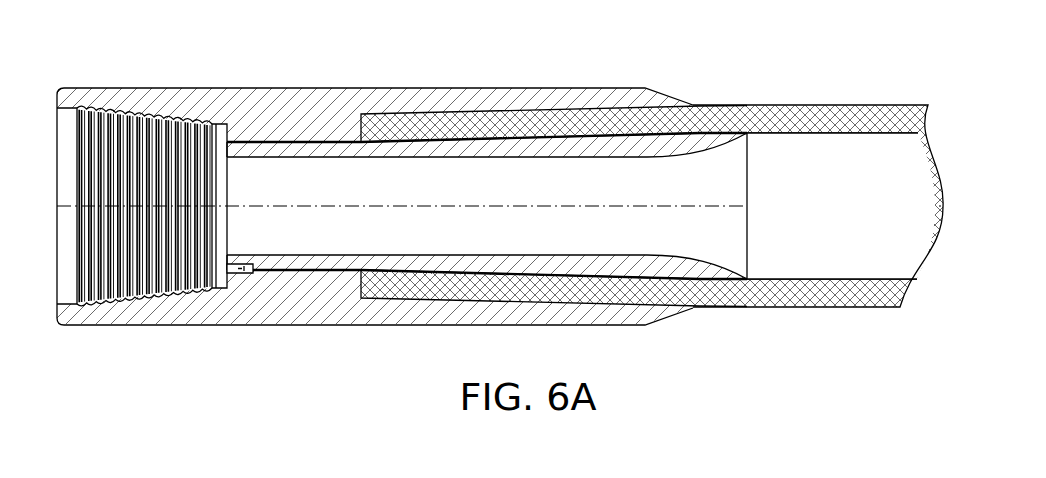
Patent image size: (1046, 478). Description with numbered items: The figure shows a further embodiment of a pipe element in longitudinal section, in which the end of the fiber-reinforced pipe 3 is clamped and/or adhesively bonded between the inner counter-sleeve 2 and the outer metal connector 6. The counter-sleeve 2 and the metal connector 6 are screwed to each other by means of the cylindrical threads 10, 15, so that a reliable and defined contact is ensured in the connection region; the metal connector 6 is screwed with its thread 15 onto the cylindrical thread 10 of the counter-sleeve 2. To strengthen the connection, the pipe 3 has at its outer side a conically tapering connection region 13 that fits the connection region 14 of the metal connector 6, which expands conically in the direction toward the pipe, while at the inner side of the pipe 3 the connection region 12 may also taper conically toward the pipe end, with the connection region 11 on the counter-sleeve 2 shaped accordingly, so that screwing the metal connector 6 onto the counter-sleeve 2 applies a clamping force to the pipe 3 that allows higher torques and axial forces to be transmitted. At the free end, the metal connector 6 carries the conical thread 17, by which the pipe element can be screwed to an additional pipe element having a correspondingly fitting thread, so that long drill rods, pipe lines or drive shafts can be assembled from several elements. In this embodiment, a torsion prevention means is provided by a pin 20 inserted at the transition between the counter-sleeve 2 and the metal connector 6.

The counter-sleeve 2 is at (660, 145).
The pipe 3 is at (800, 122).
The metal connector 6 is at (533, 102).
The cylindrical thread 10 is at (487, 147).
The connection region 11 is at (639, 147).
The connection region 12 is at (617, 135).
The connection region 13 is at (554, 161).
The connection region 14 is at (438, 114).
The cylindrical thread 15 is at (290, 142).
The conical thread 17 is at (150, 112).
The pin 20 is at (243, 275).